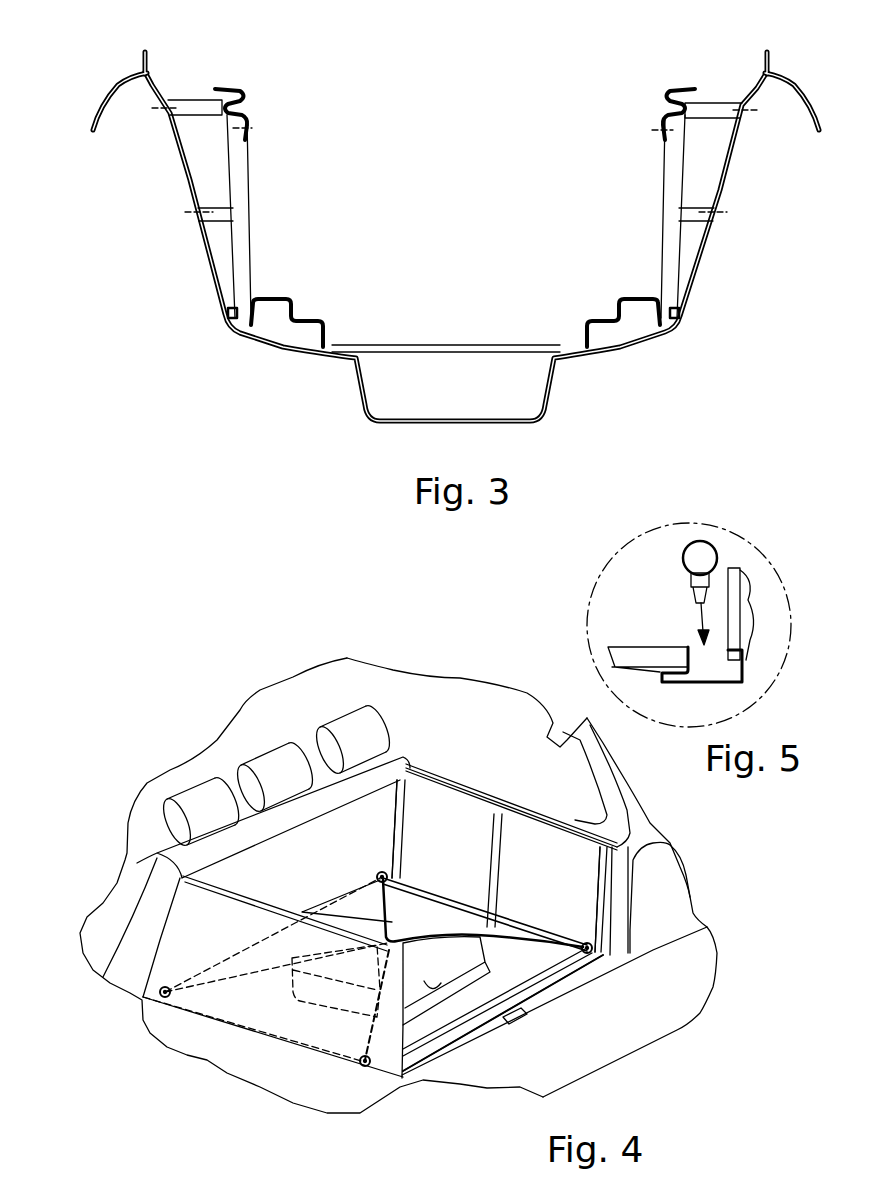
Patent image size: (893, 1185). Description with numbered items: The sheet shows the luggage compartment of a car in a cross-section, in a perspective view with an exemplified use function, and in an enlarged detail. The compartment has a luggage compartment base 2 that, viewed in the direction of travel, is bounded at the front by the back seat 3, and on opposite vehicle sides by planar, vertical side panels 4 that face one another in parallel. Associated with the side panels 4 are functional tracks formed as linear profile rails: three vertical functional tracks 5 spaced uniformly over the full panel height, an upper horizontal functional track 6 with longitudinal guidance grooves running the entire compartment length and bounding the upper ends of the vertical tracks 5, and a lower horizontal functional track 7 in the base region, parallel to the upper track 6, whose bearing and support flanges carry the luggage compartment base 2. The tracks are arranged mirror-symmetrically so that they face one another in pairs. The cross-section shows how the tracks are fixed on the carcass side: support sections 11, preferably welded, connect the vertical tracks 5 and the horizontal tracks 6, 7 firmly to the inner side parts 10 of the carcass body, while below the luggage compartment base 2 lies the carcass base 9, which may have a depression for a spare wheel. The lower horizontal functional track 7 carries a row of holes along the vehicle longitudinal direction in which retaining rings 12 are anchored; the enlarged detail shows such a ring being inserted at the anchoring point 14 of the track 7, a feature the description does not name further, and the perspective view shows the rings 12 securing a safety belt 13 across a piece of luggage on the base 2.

In FIG. 4, the luggage compartment base 2 is at (447, 1025).
In FIG. 4, the back seat 3 is at (300, 877).
In FIG. 4, the side panels 4 is at (449, 815).
In FIG. 3, the vertical functional tracks 5 is at (249, 183).
In FIG. 4, the vertical functional tracks 5 is at (596, 868).
In FIG. 3, the upper horizontal functional track 6 is at (246, 104).
In FIG. 4, the upper horizontal functional track 6 is at (478, 796).
In FIG. 3, the lower horizontal functional track 7 is at (268, 298).
In FIG. 5, the lower horizontal functional track 7 is at (687, 655).
In FIG. 4, the lower horizontal functional track 7 is at (515, 927).
In FIG. 3, the carcass base 9 is at (439, 320).
In FIG. 3, the inner side parts 10 is at (150, 82).
In FIG. 3, the support sections 11 is at (195, 100).
In FIG. 5, the retaining rings 12 is at (688, 552).
In FIG. 4, the retaining rings 12 is at (379, 871).
In FIG. 4, the safety belts 13 is at (478, 930).
In FIG. 5, the receiving groove 14 is at (712, 645).